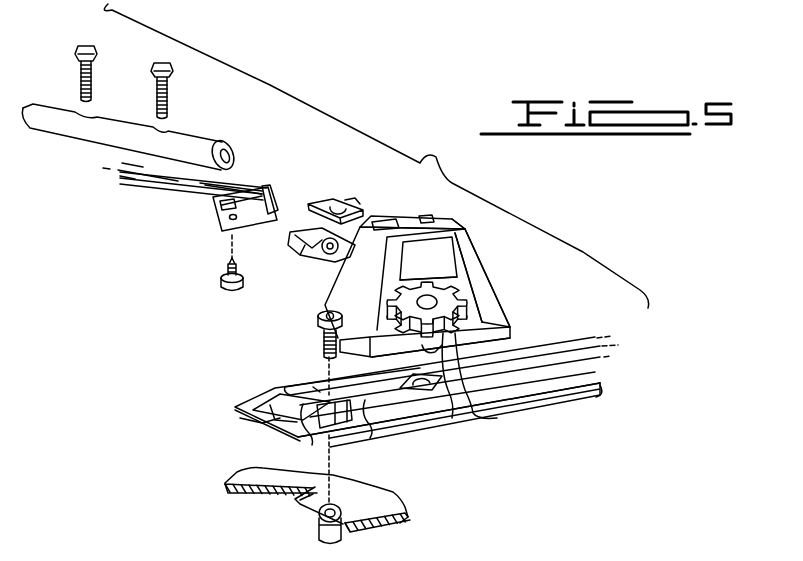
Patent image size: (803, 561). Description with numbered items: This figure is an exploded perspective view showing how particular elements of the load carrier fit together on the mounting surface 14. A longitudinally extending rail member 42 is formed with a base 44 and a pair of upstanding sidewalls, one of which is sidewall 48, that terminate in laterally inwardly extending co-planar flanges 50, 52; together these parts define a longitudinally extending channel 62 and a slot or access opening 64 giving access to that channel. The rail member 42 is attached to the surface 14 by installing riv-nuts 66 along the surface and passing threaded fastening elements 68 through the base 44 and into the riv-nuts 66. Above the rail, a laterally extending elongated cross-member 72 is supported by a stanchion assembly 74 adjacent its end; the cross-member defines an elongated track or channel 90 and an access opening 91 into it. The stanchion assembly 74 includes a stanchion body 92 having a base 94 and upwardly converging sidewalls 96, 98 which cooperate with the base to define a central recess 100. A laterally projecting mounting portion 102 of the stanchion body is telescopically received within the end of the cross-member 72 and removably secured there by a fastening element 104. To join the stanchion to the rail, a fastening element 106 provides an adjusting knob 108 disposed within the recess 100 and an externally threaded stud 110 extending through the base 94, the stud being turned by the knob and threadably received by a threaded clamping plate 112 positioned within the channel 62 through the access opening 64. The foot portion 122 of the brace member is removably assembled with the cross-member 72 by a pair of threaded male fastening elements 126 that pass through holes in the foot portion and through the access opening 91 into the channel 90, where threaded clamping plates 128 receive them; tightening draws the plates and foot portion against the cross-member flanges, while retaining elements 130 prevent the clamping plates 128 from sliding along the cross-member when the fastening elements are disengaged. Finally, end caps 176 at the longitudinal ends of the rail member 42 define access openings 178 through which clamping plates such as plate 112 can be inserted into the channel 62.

The surface 14 is at (375, 495).
The rail member 42 is at (395, 410).
The base 44 is at (310, 437).
The sidewall 48 is at (600, 396).
The flange 50 is at (313, 387).
The flange 52 is at (367, 435).
The channel 62 is at (294, 389).
The access opening 64 is at (603, 356).
The riv-nut 66 is at (337, 541).
The threaded fastening element 68 is at (318, 328).
The cross-member 72 is at (262, 184).
The stanchion assembly 74 is at (462, 222).
The channel 90 is at (222, 203).
The access opening 91 is at (205, 185).
The stanchion body 92 is at (477, 268).
The base 94 is at (496, 341).
The sidewall 96 is at (373, 279).
The sidewall 98 is at (478, 248).
The central recess 100 is at (457, 279).
The mounting portion 102 is at (387, 213).
The fastening element 104 is at (220, 284).
The fastening element 106 is at (496, 383).
The adjusting knob 108 is at (466, 298).
The threaded stud 110 is at (448, 388).
The threaded clamping plate 112 is at (410, 378).
The foot portion 122 is at (197, 137).
The threaded male fastening element 126 is at (152, 63).
The threaded clamping plate 128 is at (327, 201).
The retaining element 130 is at (300, 254).
The end cap 176 is at (263, 423).
The access opening 178 is at (290, 405).